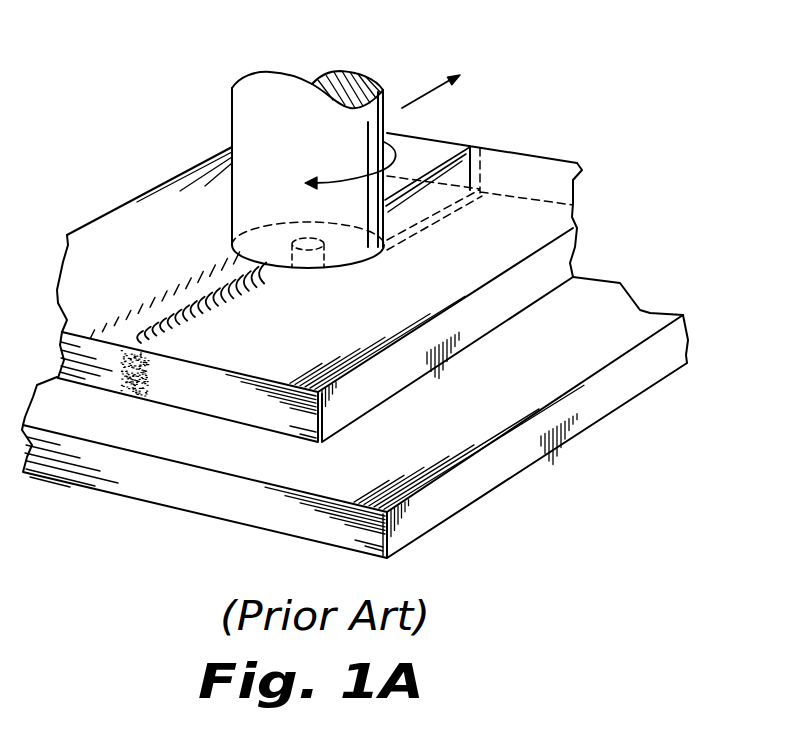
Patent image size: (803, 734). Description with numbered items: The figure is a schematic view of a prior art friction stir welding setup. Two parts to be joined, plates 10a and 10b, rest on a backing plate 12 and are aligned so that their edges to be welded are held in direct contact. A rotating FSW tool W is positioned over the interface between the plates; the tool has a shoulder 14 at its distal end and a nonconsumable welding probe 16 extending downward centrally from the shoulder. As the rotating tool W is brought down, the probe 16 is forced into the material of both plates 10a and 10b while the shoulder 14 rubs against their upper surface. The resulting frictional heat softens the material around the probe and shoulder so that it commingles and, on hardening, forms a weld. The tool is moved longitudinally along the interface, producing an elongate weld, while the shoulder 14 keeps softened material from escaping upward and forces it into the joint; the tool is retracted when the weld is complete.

The FSW tool W is at (410, 72).
The plate 10a is at (513, 282).
The plate 10b is at (138, 240).
The backing plate 12 is at (527, 368).
The shoulder 14 is at (385, 265).
The welding probe 16 is at (180, 355).